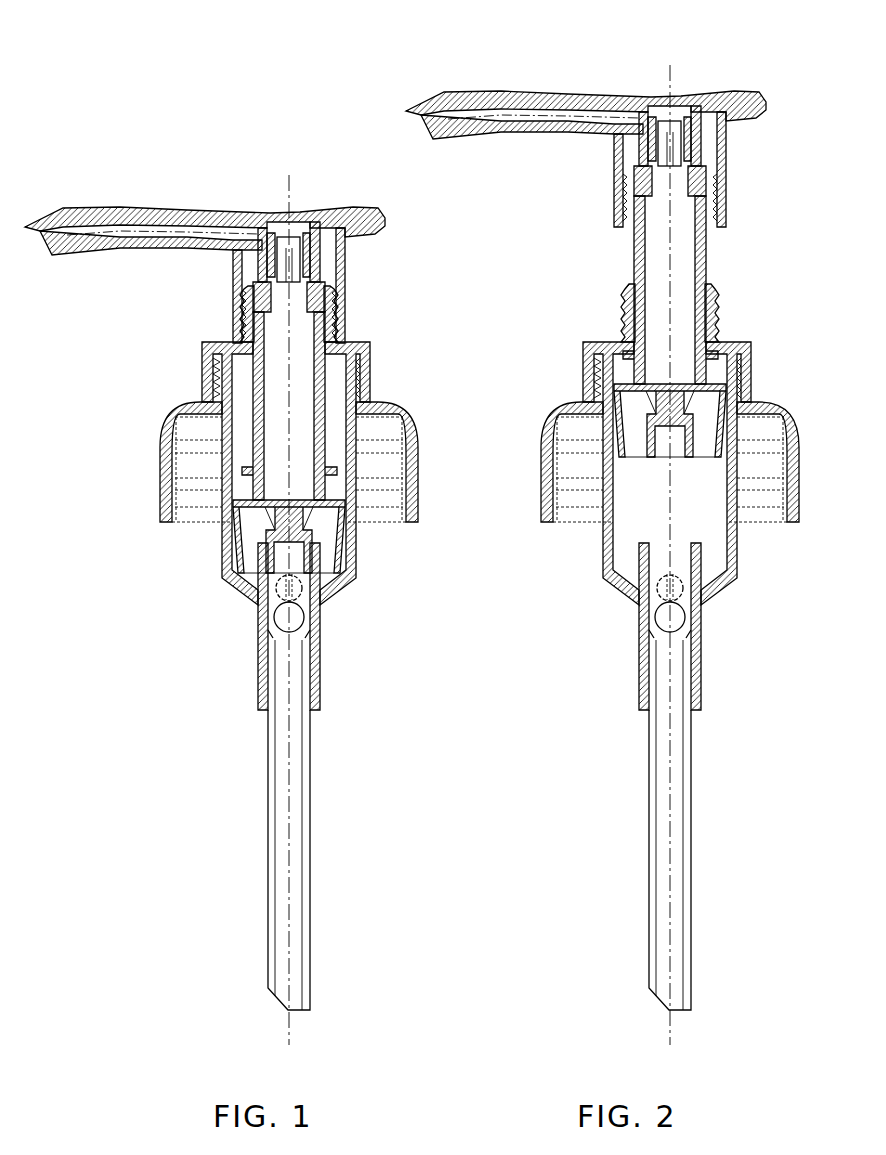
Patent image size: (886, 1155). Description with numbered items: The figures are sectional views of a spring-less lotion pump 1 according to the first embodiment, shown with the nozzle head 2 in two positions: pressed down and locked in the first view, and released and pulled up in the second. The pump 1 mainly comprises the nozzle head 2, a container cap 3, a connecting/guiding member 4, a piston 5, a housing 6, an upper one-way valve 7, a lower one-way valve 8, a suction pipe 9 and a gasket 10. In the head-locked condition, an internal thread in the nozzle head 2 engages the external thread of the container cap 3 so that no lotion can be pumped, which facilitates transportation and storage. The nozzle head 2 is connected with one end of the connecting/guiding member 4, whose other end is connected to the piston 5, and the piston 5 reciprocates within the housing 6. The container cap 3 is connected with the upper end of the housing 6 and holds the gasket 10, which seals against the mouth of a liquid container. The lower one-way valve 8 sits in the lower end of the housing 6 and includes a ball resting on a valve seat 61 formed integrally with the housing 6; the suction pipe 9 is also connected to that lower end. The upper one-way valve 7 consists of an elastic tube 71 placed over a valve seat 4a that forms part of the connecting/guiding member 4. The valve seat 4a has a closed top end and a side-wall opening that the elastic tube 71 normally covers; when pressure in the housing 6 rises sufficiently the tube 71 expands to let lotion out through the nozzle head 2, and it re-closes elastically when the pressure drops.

In FIG. 1, the spring-less lotion pump 1 is at (157, 183).
In FIG. 1, the nozzle head 2 is at (383, 227).
In FIG. 2, the nozzle head 2 is at (586, 159).
In FIG. 1, the container cap 3 is at (370, 349).
In FIG. 2, the container cap 3 is at (667, 444).
In FIG. 1, the connecting/guiding member 4 is at (320, 388).
In FIG. 2, the connecting/guiding member 4 is at (708, 290).
In FIG. 2, the valve seat 4a is at (663, 101).
In FIG. 1, the piston 5 is at (353, 512).
In FIG. 2, the piston 5 is at (681, 371).
In FIG. 1, the housing 6 is at (353, 558).
In FIG. 2, the housing 6 is at (670, 626).
In FIG. 1, the valve seat 61 is at (265, 625).
In FIG. 2, the valve seat 61 is at (670, 587).
In FIG. 1, the upper one-way valve 7 is at (303, 253).
In FIG. 2, the elastic tube 71 is at (733, 152).
In FIG. 1, the lower one-way valve 8 is at (293, 622).
In FIG. 2, the lower one-way valve 8 is at (670, 617).
In FIG. 1, the suction pipe 9 is at (292, 843).
In FIG. 2, the suction pipe 9 is at (670, 825).
In FIG. 1, the gasket 10 is at (400, 411).
In FIG. 2, the gasket 10 is at (670, 462).